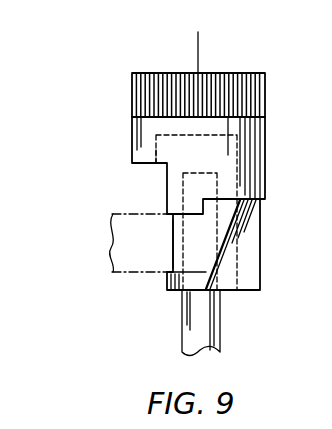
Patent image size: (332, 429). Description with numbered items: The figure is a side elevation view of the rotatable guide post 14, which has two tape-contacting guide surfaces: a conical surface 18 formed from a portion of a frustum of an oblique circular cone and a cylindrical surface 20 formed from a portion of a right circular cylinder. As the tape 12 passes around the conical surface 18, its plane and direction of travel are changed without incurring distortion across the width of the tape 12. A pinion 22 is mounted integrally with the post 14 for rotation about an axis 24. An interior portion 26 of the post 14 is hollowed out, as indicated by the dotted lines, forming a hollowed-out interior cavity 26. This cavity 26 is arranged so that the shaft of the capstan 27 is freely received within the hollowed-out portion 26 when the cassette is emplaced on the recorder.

The tape 12 is at (113, 273).
The guide post 14 is at (104, 219).
The conical surface 18 is at (261, 215).
The cylindrical surface 20 is at (173, 253).
The pinion 22 is at (131, 90).
The axis 24 is at (198, 50).
The hollowed-out interior cavity 26 is at (168, 148).
The capstan 27 is at (221, 322).